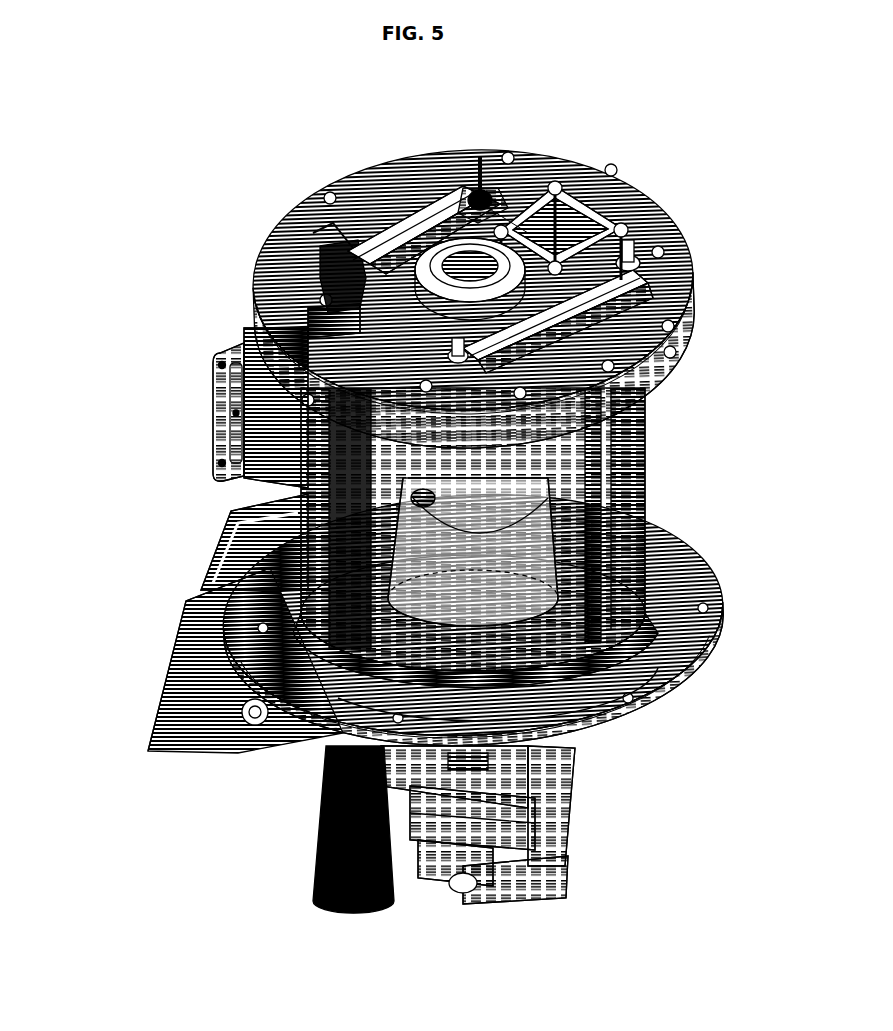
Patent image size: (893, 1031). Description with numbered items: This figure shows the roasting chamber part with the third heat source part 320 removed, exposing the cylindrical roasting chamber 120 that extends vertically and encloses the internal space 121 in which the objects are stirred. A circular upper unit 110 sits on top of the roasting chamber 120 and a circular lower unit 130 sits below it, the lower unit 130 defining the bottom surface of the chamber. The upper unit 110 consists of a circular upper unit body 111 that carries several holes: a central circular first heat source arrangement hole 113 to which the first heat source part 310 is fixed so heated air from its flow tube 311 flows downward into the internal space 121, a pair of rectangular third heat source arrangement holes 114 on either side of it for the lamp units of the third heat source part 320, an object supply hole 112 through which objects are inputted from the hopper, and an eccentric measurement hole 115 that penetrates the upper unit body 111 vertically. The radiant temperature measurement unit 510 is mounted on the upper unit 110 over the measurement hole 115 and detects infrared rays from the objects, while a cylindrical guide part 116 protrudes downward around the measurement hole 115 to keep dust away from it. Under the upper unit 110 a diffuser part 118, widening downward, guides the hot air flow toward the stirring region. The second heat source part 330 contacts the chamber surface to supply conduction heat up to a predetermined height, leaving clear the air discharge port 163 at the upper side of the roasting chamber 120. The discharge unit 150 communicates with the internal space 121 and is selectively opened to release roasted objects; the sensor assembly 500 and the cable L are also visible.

The upper unit 110 is at (650, 195).
The upper unit body 111 is at (583, 182).
The object supply hole 112 is at (538, 172).
The first heat source arrangement hole 113 is at (432, 224).
The third heat source arrangement hole 114 is at (402, 215).
The measurement hole 115 is at (222, 408).
The guide part 116 is at (272, 478).
The diffuser part 118 is at (560, 655).
The roasting chamber 120 is at (642, 442).
The internal space 121 is at (620, 535).
The lower unit 130 is at (708, 538).
The discharge unit 150 is at (130, 718).
The air discharge port 163 is at (210, 420).
The first heat source part 310 is at (490, 170).
The flow tube 311 is at (472, 200).
The third heat source part 320 is at (385, 212).
The second heat source part 330 is at (637, 642).
The sensor 500 is at (275, 279).
The radiant temperature measurement unit 510 is at (300, 308).
The cable L is at (300, 850).